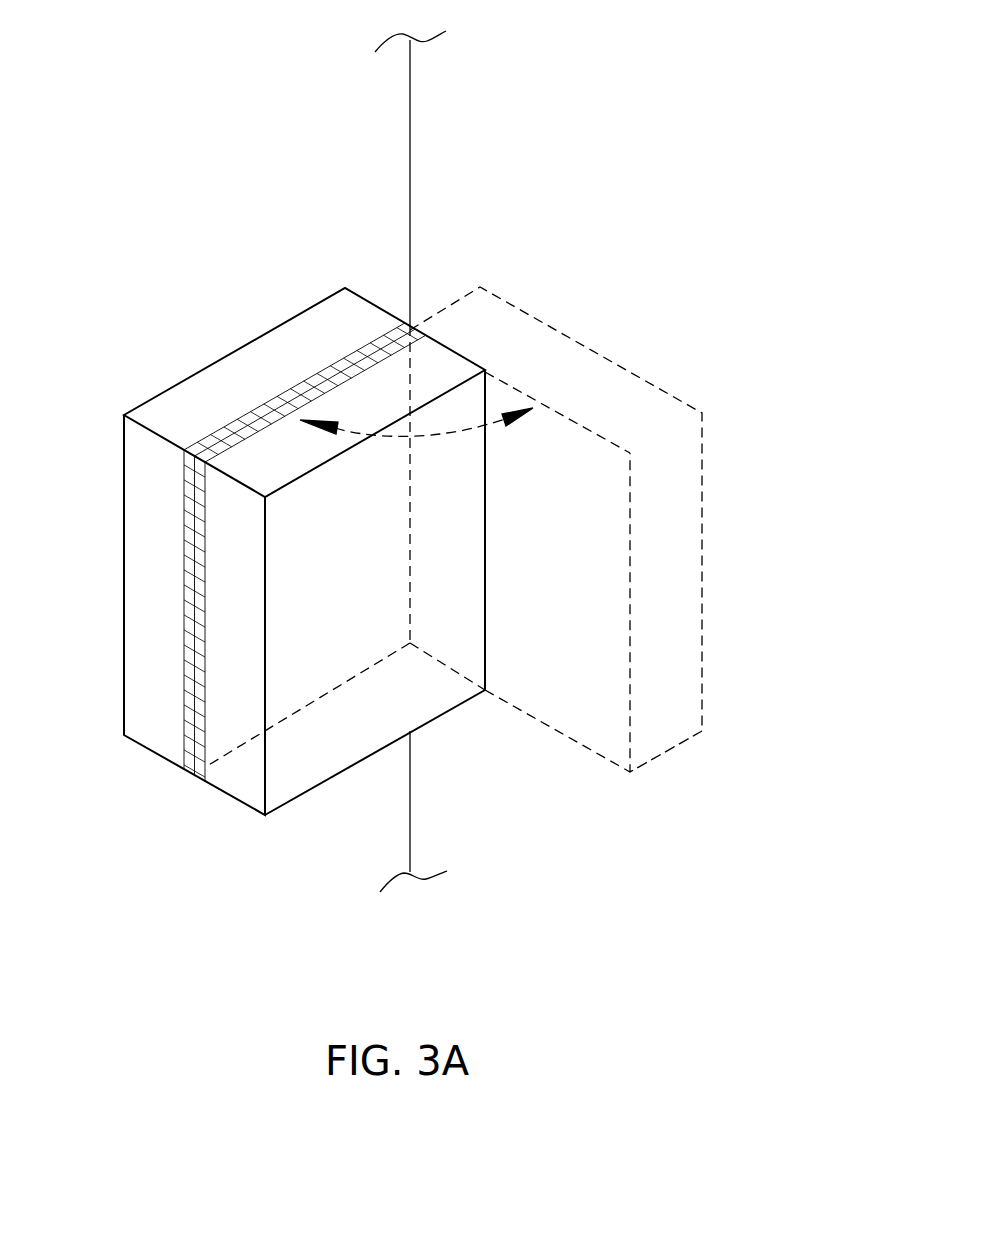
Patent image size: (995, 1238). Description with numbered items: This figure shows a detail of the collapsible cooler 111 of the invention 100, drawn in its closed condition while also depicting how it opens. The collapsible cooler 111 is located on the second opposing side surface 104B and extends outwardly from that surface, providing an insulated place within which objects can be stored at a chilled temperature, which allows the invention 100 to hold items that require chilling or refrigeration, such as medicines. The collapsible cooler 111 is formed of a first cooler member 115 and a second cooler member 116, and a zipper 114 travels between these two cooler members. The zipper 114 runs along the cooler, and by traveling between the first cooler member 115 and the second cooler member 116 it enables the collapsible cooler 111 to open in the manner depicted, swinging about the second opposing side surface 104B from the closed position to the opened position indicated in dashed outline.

The invention 100 is at (598, 184).
The second opposing side surface 104B is at (350, 202).
The collapsible cooler 111 is at (375, 309).
The zipper 114 is at (197, 773).
The first cooler member 115 is at (162, 412).
The second cooler member 116 is at (263, 452).